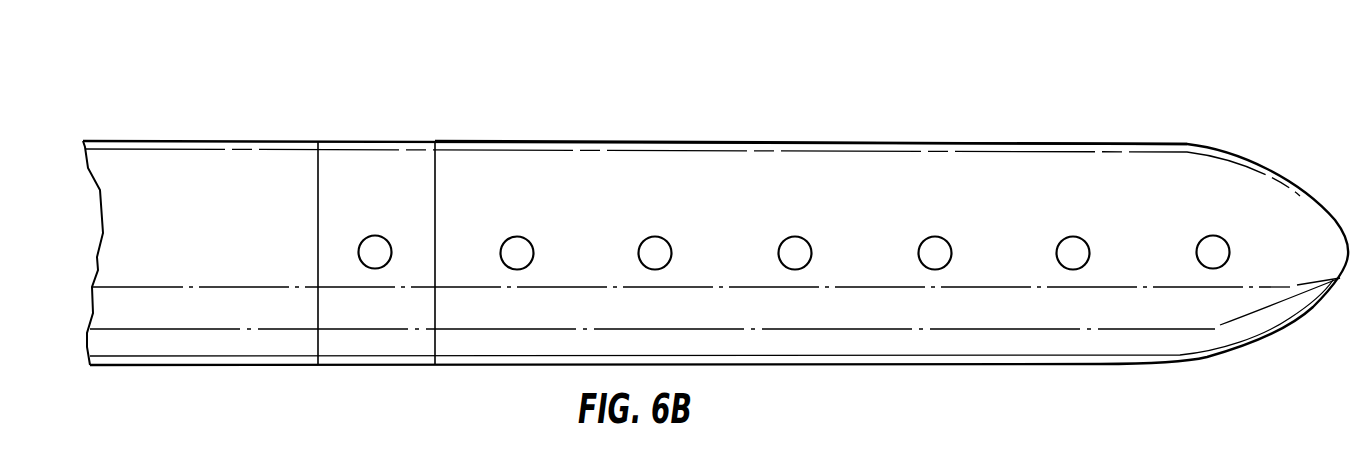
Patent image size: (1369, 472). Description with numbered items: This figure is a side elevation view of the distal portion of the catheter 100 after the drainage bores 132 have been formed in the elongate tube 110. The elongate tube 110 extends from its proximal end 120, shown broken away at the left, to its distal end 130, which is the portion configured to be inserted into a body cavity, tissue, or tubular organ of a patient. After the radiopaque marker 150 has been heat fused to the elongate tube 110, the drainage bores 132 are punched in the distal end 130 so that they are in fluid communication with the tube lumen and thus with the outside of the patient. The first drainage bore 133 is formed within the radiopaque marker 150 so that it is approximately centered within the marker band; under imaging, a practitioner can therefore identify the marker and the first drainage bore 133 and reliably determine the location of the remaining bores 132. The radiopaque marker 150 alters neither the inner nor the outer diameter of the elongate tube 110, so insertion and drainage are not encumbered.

The catheter 100 is at (1107, 52).
The elongate tube 110 is at (792, 74).
The proximal end 120 is at (182, 138).
The distal end 130 is at (598, 141).
The drainage bores 132 is at (390, 263).
The first drainage bore 133 is at (393, 251).
The radiopaque marker 150 is at (350, 186).